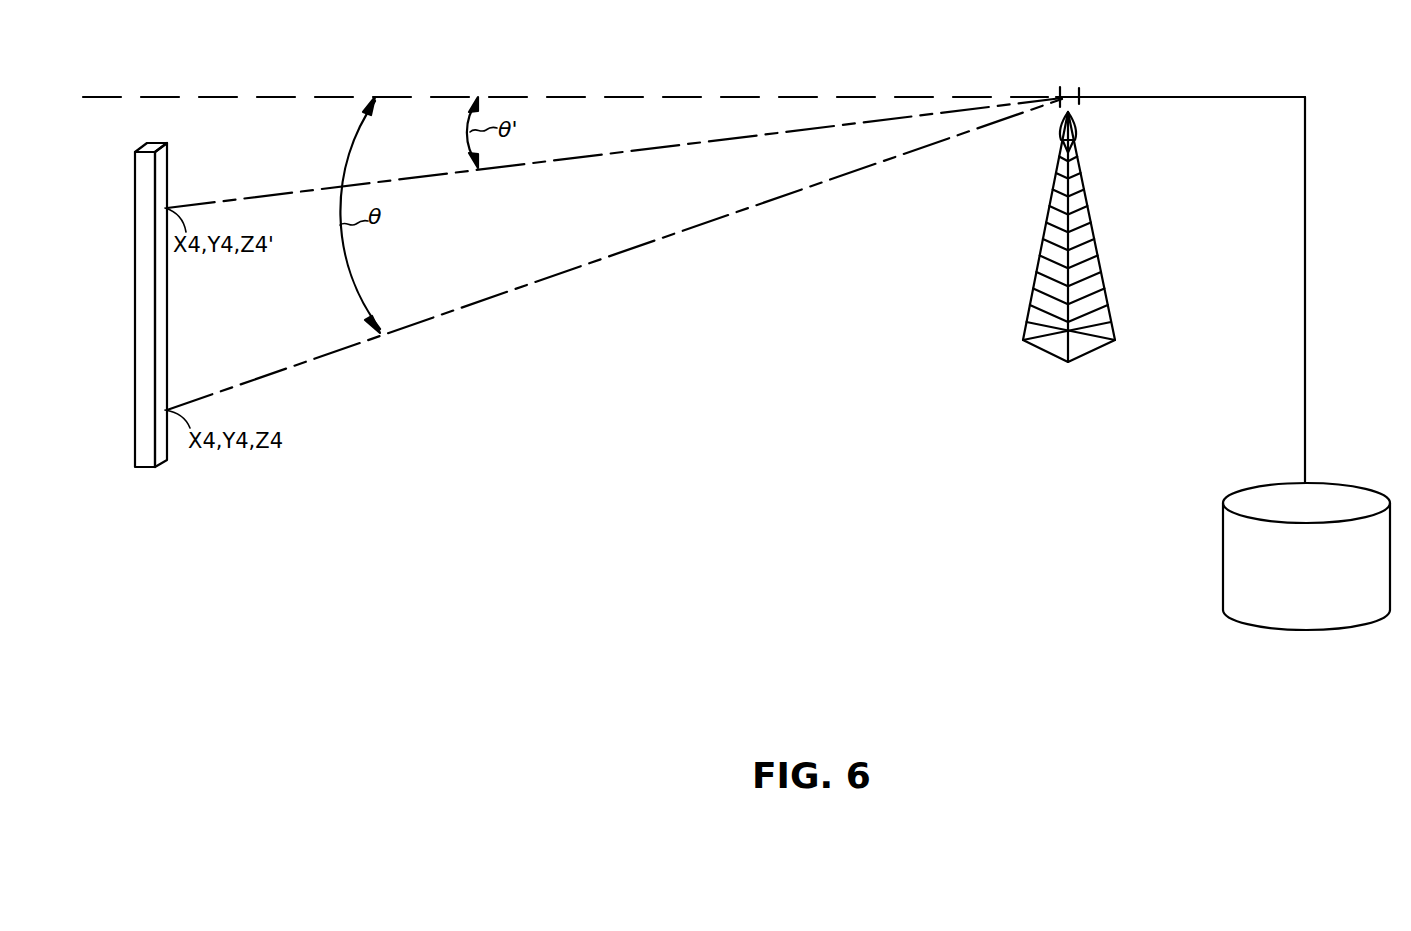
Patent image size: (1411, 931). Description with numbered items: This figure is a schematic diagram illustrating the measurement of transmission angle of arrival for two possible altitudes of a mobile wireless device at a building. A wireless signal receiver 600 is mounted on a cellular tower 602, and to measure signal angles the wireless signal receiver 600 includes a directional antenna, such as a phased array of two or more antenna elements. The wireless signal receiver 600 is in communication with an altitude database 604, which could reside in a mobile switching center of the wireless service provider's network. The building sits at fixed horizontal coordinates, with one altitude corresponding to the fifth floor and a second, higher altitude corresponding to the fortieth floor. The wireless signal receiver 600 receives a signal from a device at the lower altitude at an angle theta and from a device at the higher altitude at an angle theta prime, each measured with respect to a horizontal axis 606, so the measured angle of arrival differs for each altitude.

The wireless signal receiver 600 is at (1069, 110).
The cellular tower 602 is at (1038, 262).
The altitude database 604 is at (1303, 630).
The horizontal axis 606 is at (156, 97).